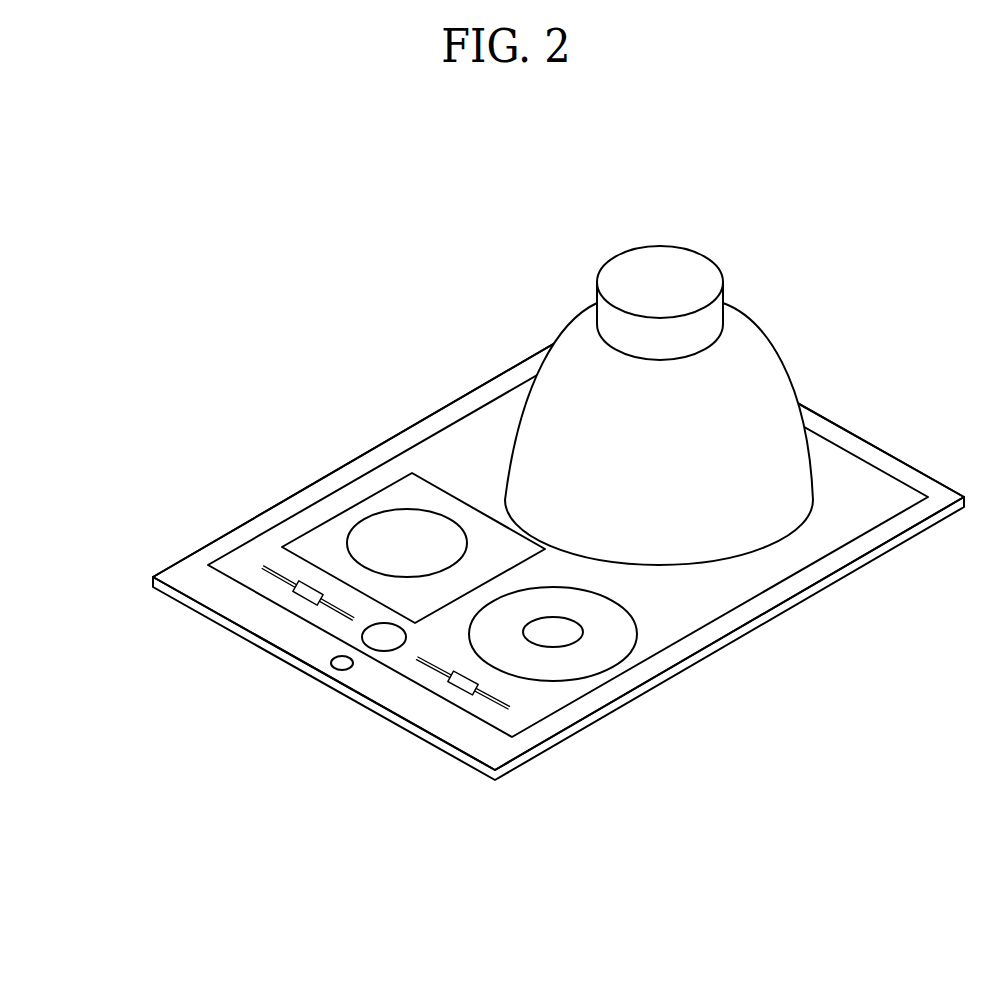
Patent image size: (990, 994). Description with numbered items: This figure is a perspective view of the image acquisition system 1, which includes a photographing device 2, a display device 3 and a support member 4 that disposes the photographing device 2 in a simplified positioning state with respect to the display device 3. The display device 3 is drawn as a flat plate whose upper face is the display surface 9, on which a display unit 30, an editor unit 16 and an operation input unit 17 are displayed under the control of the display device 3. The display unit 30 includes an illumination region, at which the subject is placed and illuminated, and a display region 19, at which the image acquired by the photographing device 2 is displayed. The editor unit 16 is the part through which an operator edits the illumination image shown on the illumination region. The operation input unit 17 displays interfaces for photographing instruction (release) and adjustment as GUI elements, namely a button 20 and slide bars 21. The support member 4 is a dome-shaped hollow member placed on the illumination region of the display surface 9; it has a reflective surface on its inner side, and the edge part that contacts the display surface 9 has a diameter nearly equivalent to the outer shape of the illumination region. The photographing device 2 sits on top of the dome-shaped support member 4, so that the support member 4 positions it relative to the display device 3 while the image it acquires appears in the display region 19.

The image acquisition system 1 is at (305, 287).
The photographing device 2 is at (692, 262).
The display device 3 is at (602, 731).
The support member 4 is at (755, 378).
The display surface 9 is at (855, 493).
The editor unit 16 is at (613, 630).
The operation input unit 17 is at (382, 677).
The display region 19 is at (398, 503).
The button 20 is at (373, 637).
The slide bars 21 is at (440, 672).
The display unit 30 is at (449, 437).